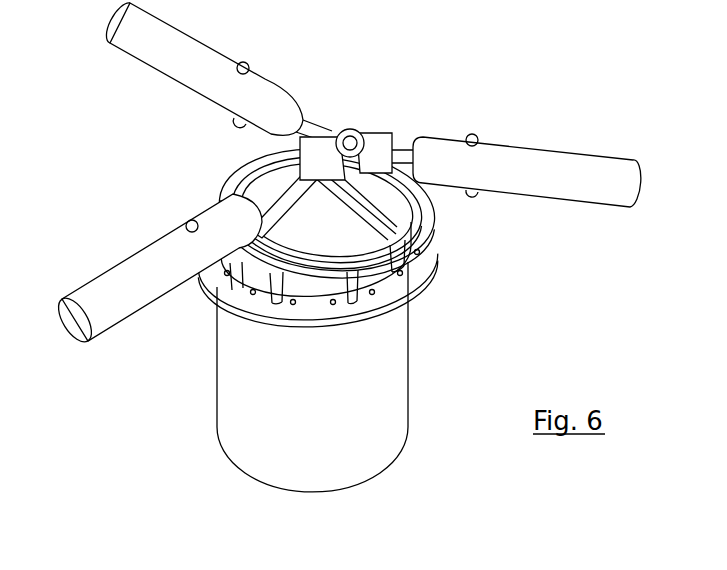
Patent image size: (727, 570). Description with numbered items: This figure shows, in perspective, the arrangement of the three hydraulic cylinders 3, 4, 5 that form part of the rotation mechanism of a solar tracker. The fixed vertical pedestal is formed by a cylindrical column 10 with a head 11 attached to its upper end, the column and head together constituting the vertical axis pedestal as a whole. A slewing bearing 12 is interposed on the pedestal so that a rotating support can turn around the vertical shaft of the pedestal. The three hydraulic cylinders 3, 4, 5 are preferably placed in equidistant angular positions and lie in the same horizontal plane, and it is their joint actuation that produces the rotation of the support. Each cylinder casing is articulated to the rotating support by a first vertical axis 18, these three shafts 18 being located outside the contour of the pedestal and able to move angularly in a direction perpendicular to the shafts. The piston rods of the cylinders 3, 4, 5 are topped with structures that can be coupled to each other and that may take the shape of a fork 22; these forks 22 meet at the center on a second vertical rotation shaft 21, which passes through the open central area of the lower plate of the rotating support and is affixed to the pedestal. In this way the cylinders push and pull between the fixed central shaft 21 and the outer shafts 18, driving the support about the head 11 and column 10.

The hydraulic cylinder 3 is at (588, 170).
The hydraulic cylinder 4 is at (167, 53).
The hydraulic cylinder 5 is at (107, 307).
The cylindrical column 10 is at (383, 428).
The head 11 is at (373, 268).
The slewing bearing 12 is at (395, 225).
The first vertical axis 18 is at (248, 70).
The second vertical rotation shaft 21 is at (350, 138).
The fork 22 is at (380, 147).